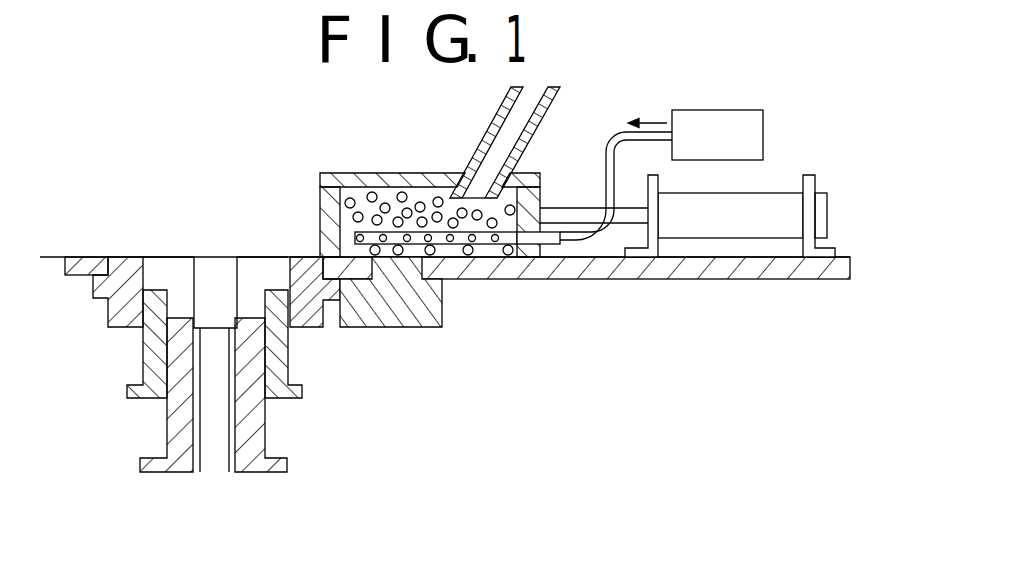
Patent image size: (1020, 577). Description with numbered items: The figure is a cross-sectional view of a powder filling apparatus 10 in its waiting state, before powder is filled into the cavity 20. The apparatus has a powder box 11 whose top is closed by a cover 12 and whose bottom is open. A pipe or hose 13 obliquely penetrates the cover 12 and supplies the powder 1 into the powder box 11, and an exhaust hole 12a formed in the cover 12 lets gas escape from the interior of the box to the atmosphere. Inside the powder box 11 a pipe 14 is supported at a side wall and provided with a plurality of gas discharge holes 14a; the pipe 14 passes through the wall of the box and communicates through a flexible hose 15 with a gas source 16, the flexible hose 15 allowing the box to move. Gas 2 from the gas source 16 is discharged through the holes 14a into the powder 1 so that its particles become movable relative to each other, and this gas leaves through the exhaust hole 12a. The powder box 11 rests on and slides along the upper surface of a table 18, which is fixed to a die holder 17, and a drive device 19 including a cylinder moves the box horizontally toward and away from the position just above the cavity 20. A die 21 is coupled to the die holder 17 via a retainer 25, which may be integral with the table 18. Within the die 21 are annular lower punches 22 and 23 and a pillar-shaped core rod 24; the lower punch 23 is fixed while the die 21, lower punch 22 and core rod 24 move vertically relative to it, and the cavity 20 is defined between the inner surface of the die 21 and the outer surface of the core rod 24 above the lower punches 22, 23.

The powder 1 is at (402, 192).
The gas 2 is at (651, 120).
The powder filling apparatus 10 is at (853, 265).
The powder box 11 is at (327, 207).
The cover 12 is at (520, 175).
The exhaust hole 12a is at (355, 180).
The pipe or hose 13 is at (503, 113).
The pipe 14 is at (550, 245).
The gas discharge holes 14a is at (490, 237).
The flexible hose 15 is at (623, 130).
The gas source 16 is at (730, 110).
The die holder 17 is at (381, 318).
The table 18 is at (635, 265).
The drive device 19 is at (740, 238).
The cavity 20 is at (170, 272).
The die 21 is at (310, 318).
The lower punch 22 is at (290, 397).
The lower punch 23 is at (287, 470).
The core rod 24 is at (220, 275).
The retainer 25 is at (90, 255).